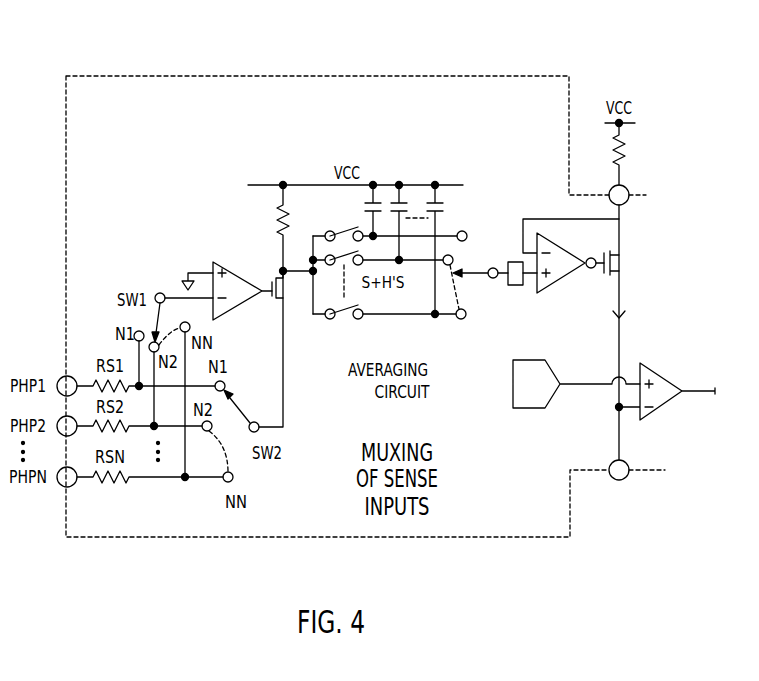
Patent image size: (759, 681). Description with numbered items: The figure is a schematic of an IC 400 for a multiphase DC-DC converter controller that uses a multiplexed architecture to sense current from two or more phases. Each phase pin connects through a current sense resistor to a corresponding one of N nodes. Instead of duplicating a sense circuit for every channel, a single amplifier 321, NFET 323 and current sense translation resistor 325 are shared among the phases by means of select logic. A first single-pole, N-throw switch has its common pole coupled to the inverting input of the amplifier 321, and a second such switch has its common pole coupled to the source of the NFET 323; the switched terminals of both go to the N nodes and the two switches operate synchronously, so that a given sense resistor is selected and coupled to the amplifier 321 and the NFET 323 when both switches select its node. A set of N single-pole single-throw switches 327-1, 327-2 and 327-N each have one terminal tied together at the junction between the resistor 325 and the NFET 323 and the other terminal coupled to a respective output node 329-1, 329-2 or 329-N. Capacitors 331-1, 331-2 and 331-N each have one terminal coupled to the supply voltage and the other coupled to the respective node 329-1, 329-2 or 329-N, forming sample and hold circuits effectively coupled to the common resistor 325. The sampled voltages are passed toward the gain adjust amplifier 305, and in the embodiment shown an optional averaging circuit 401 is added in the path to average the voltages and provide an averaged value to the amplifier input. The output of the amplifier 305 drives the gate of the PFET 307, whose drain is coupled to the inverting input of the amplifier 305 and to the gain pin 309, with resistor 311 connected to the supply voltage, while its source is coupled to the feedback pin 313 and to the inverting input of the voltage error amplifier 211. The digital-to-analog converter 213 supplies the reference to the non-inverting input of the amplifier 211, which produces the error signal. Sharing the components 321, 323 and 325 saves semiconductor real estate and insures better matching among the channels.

The IC 400 is at (239, 50).
The amplifier 321 is at (238, 275).
The NFET 323 is at (280, 302).
The current sense translation resistor 325 is at (277, 228).
The SPST switch 327-1 is at (381, 222).
The SPST switch 327-2 is at (323, 246).
The SPST switch 327-N is at (384, 325).
The capacitor 331-1 is at (378, 202).
The capacitor 331-2 is at (402, 207).
The capacitor 331-N is at (442, 214).
The output node 329-1 is at (484, 229).
The output node 329-2 is at (477, 252).
The output node 329-N is at (484, 306).
The averaging circuit 401 is at (518, 292).
The gain adjust amplifier 305 is at (550, 285).
The PFET 307 is at (622, 254).
The gain pin 309 is at (640, 192).
The resistor 311 is at (630, 168).
The feedback pin 313 is at (627, 462).
The DAC 213 is at (530, 360).
The voltage error amplifier 211 is at (670, 371).